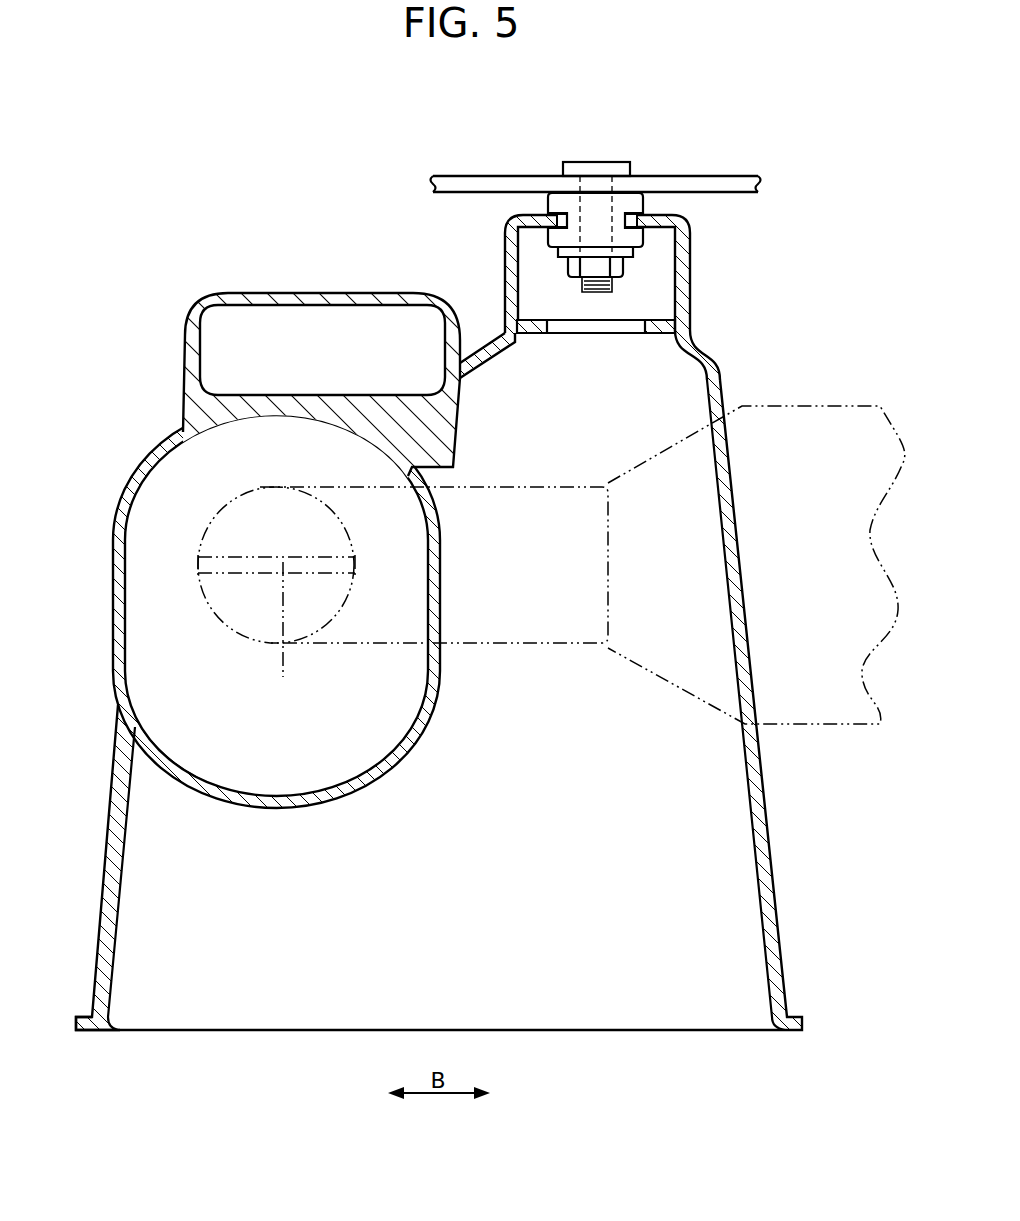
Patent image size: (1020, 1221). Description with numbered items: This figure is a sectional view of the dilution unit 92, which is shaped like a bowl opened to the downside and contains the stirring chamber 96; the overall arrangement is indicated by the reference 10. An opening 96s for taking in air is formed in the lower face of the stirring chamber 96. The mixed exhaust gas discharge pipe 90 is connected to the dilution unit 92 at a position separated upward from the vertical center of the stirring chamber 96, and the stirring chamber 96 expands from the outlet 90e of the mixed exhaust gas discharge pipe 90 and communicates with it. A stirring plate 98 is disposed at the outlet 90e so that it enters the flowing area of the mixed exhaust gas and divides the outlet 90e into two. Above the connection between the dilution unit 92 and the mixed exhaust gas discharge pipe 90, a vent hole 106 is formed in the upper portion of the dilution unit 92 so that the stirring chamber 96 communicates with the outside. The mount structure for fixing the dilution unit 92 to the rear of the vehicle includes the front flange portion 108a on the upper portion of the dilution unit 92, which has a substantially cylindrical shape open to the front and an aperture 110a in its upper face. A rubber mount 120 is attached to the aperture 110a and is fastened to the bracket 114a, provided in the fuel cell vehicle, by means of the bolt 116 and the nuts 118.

The vehicle body structure 10 is at (306, 194).
The dilution unit 92 is at (478, 299).
The vent hole 106 is at (267, 327).
The front flange portion 108a is at (683, 252).
The aperture 110a is at (622, 220).
The bracket 114a is at (726, 180).
The bolt 116 is at (577, 167).
The nut 118 is at (625, 270).
The rubber mount 120 is at (638, 202).
The mixed exhaust gas discharge pipe 90 is at (527, 483).
The outlet 90e is at (250, 638).
The stirring plate 98 is at (276, 629).
The stirring chamber 96 is at (312, 972).
The opening 96s is at (125, 1023).